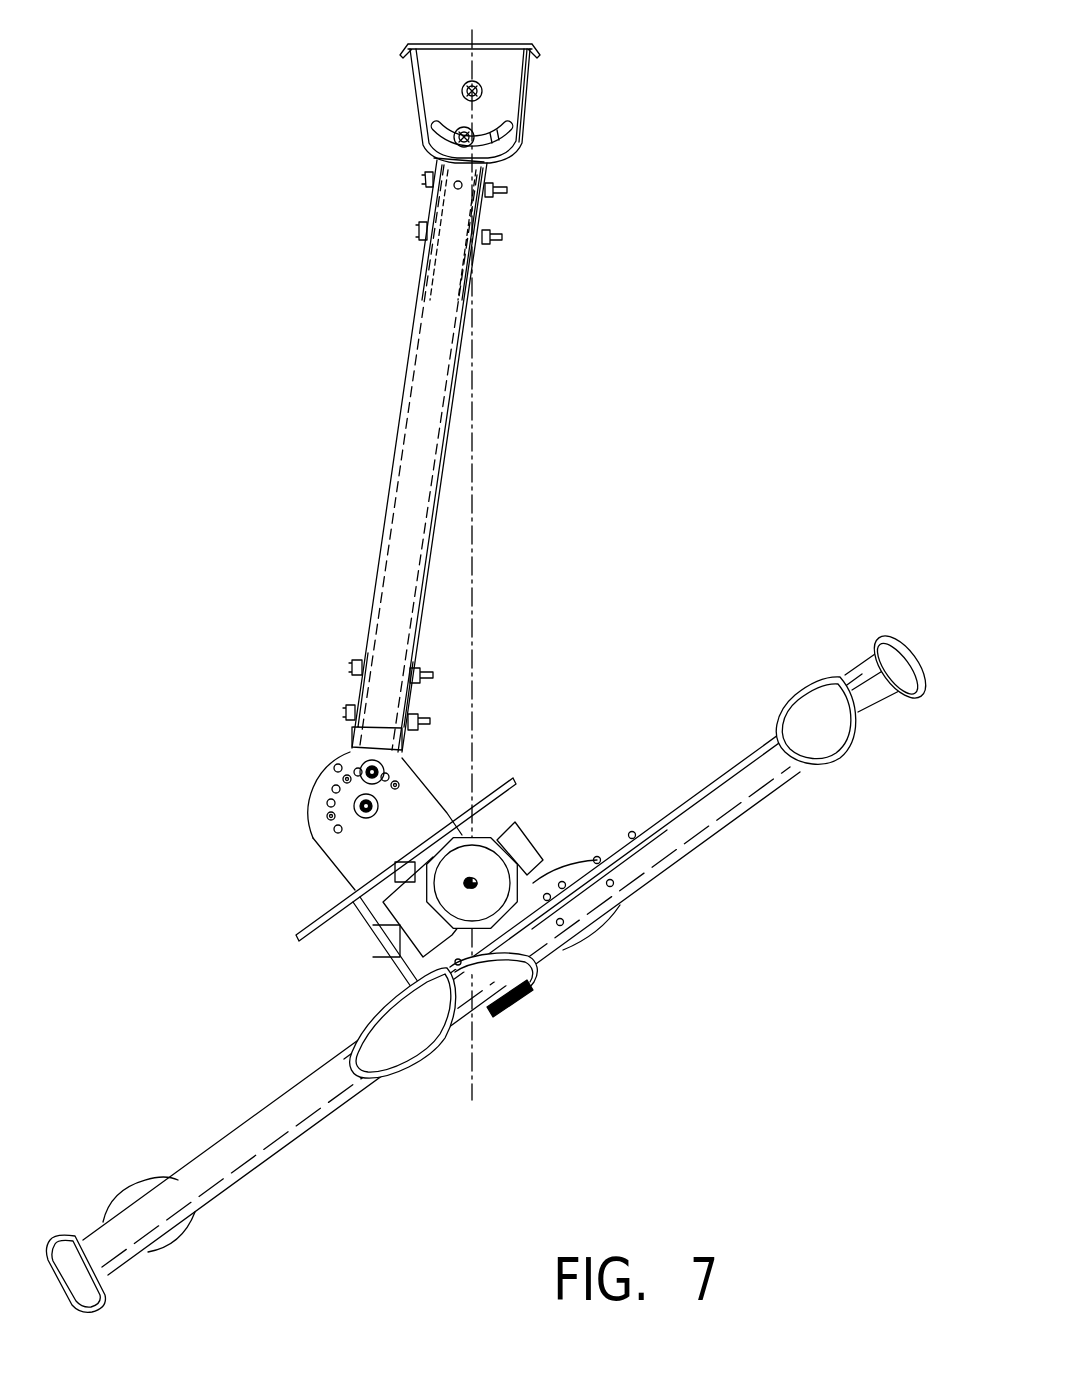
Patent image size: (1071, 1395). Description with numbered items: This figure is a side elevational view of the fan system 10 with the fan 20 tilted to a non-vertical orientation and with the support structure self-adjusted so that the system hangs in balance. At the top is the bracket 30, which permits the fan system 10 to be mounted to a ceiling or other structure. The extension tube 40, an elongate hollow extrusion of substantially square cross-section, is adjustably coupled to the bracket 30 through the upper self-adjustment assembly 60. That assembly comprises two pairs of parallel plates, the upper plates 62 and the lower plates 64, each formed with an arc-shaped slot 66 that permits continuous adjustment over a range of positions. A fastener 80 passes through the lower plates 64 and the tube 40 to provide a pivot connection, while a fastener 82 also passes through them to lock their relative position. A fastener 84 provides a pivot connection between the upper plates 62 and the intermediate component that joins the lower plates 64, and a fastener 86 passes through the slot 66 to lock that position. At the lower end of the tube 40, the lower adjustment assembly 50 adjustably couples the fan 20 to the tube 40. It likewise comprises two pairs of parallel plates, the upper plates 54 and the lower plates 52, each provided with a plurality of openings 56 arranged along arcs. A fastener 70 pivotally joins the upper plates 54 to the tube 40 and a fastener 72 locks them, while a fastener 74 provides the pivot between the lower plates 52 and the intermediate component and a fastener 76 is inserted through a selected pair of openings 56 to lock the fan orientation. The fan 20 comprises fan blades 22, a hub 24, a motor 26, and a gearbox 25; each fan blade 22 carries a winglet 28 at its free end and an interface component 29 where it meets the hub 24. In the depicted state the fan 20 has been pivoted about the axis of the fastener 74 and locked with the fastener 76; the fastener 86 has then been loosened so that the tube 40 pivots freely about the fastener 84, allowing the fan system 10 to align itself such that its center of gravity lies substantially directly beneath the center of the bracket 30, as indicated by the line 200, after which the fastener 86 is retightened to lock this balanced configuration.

The fan system 10 is at (490, 658).
The fan 20 is at (490, 969).
The fan blades 22 is at (247, 1147).
The hub 24 is at (553, 962).
The gearbox 25 is at (412, 920).
The motor 26 is at (500, 870).
The winglet 28 is at (400, 1055).
The interface component 29 is at (513, 1002).
The bracket 30 is at (436, 45).
The extension tube 40 is at (428, 410).
The lower adjustment assembly 50 is at (338, 806).
The lower plates 52 is at (345, 850).
The upper plates 54 is at (348, 693).
The openings 56 is at (335, 810).
The upper self-adjustment assembly 60 is at (432, 152).
The upper plates 62 is at (508, 100).
The lower plates 64 is at (488, 215).
The arc-shaped slot 66 is at (503, 138).
The fastener 70 is at (345, 715).
The fastener 72 is at (357, 660).
The fastener 74 is at (376, 808).
The fastener 76 is at (382, 775).
The fastener 80 is at (424, 178).
The fastener 82 is at (383, 222).
The fastener 84 is at (462, 88).
The fastener 86 is at (454, 133).
The line 200 is at (472, 558).